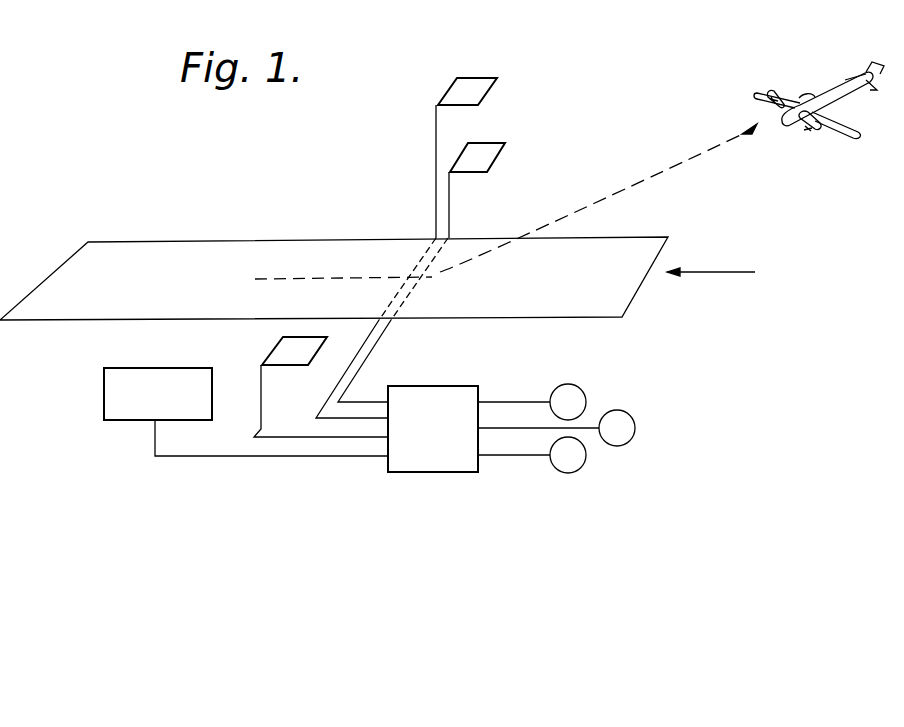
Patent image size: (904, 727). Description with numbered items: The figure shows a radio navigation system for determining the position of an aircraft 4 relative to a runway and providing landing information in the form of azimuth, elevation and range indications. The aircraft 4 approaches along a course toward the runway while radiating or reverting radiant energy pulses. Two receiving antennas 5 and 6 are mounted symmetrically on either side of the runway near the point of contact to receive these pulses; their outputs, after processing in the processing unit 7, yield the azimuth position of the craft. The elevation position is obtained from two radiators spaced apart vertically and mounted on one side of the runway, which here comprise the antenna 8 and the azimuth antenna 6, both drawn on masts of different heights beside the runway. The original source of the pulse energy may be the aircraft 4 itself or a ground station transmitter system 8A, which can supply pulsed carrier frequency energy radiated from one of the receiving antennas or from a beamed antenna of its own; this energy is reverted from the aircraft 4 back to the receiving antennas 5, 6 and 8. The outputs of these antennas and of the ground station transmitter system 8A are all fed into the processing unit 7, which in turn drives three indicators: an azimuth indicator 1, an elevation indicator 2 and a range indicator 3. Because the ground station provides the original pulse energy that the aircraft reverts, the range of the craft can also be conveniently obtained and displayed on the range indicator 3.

The azimuth indicator 1 is at (634, 422).
The elevation indicator 2 is at (579, 467).
The range indicator 3 is at (581, 394).
The aircraft 4 is at (827, 93).
The antenna 5 is at (285, 349).
The antenna 6 is at (487, 148).
The processing unit 7 is at (442, 392).
The antenna 8 is at (478, 82).
The ground station transmitter system 8A is at (104, 404).